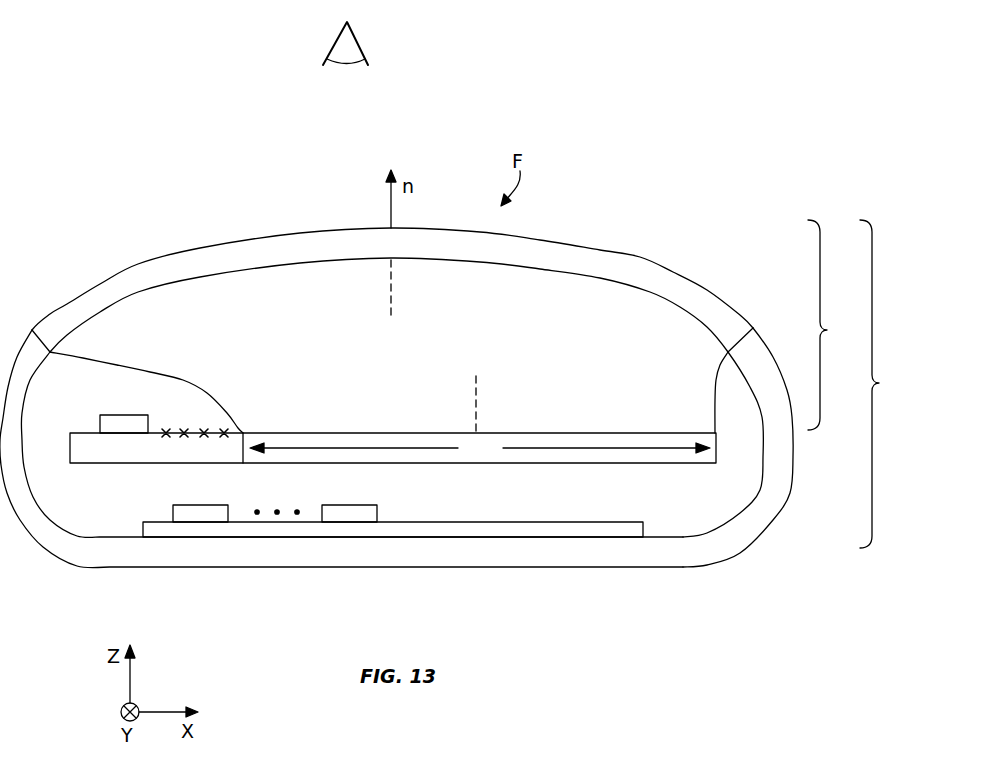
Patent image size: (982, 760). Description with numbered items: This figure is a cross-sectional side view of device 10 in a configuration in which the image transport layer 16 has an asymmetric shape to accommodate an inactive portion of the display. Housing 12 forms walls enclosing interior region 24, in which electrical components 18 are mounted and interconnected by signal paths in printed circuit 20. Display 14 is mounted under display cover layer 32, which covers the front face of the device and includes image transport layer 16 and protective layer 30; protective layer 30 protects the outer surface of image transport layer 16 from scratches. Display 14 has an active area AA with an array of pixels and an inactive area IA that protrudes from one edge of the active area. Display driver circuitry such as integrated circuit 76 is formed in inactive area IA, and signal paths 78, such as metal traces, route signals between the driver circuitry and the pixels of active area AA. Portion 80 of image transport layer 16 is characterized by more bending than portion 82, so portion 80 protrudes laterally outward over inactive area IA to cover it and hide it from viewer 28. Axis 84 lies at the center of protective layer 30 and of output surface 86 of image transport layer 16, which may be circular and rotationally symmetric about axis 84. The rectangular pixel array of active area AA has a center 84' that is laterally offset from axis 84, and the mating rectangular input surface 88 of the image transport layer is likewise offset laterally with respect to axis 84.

The device 10 is at (885, 384).
The housing 12 is at (334, 553).
The display 14 is at (599, 457).
The image transport layer 16 is at (283, 287).
The electrical components 18 is at (198, 510).
The printed circuit 20 is at (498, 527).
The interior region 24 is at (97, 513).
The viewer 28 is at (358, 42).
The protective layer 30 is at (540, 250).
The display cover layer 32 is at (832, 325).
The integrated circuit 76 is at (112, 414).
The signal paths 78 is at (184, 428).
The portion of image transport layer 80 is at (141, 330).
The portion of image transport layer 82 is at (708, 350).
The axis 84 is at (418, 289).
The center 84' is at (506, 399).
The output surface 86 is at (602, 278).
The input surface 88 is at (567, 432).